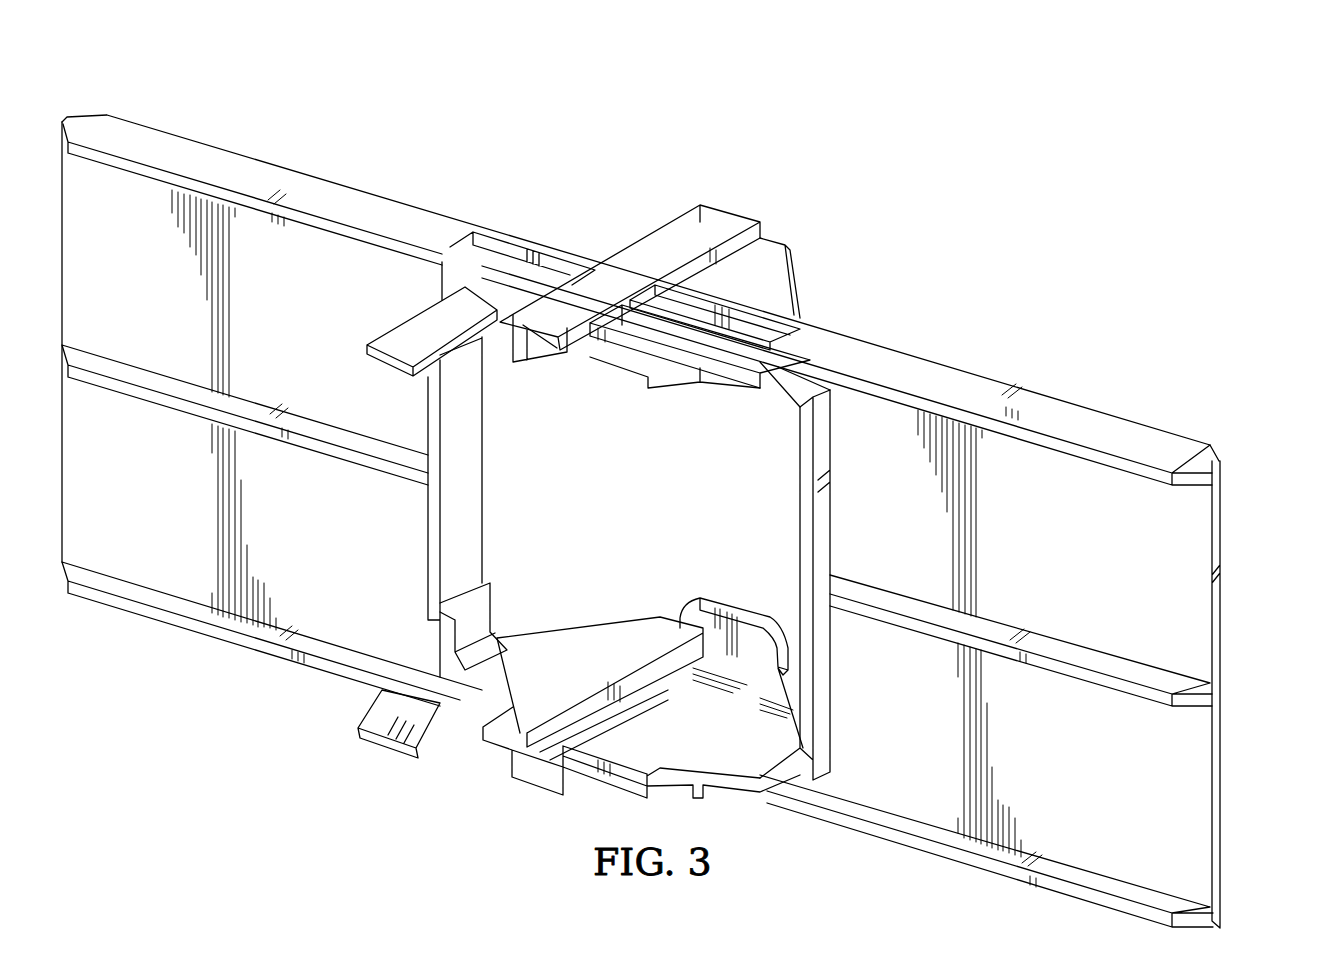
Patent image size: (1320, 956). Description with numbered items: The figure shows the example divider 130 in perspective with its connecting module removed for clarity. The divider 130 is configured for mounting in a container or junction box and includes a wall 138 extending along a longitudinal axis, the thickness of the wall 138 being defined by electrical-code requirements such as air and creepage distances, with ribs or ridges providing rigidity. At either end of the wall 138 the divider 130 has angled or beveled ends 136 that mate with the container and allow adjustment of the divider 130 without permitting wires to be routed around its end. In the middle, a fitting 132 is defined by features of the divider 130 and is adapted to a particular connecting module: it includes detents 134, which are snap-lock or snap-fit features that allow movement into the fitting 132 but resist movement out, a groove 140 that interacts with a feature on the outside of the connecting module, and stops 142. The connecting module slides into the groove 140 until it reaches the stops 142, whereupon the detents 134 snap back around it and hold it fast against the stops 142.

The divider 130 is at (667, 502).
The fitting 132 is at (728, 224).
The detents 134 is at (400, 330).
The angled or beveled ends 136 is at (63, 122).
The wall 138 is at (938, 366).
The groove 140 is at (540, 760).
The stops 142 is at (744, 602).